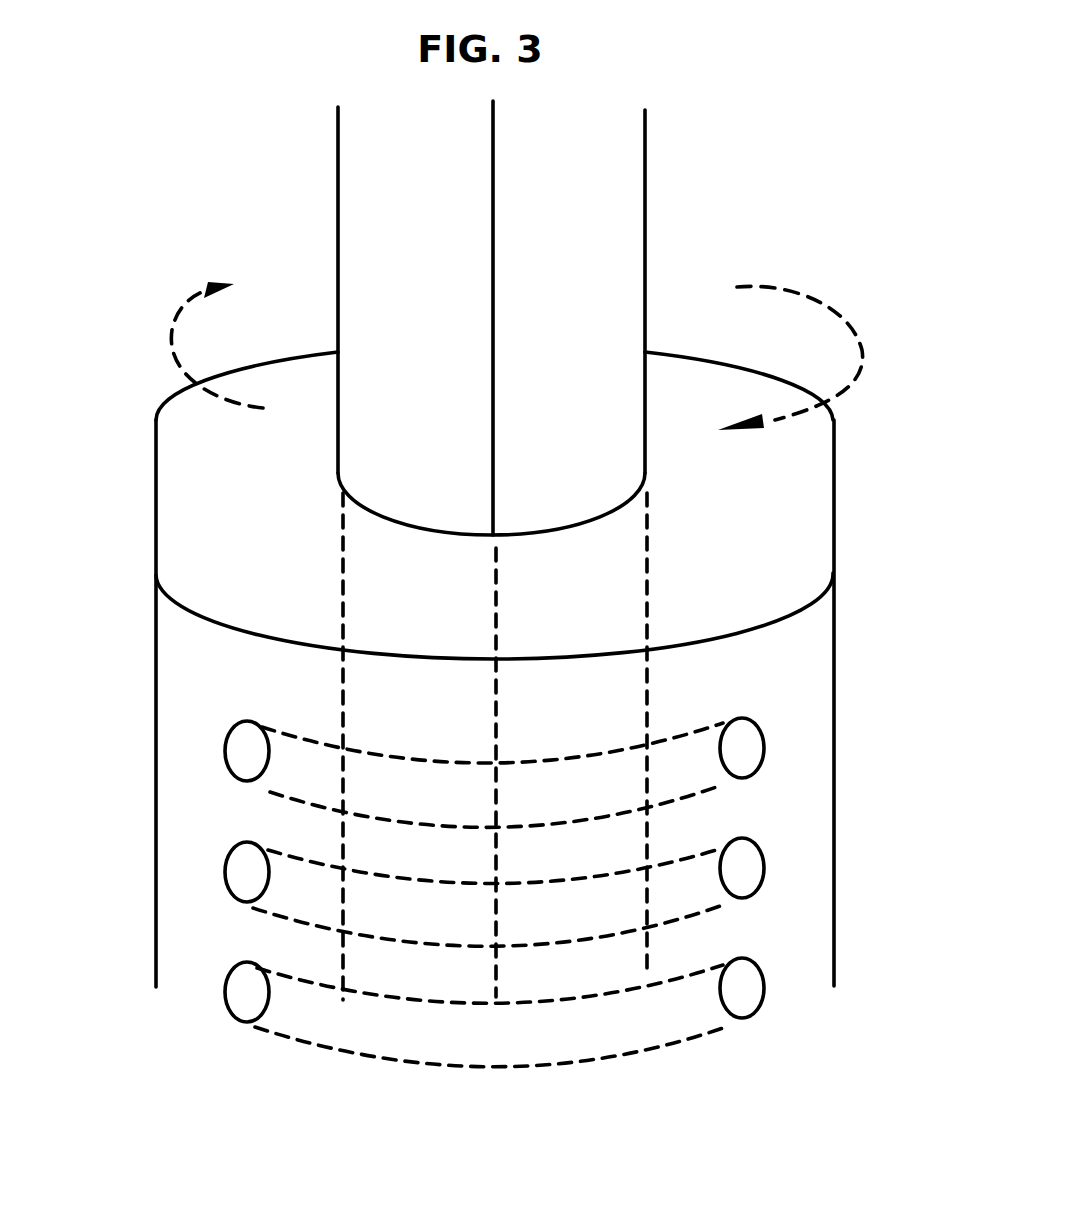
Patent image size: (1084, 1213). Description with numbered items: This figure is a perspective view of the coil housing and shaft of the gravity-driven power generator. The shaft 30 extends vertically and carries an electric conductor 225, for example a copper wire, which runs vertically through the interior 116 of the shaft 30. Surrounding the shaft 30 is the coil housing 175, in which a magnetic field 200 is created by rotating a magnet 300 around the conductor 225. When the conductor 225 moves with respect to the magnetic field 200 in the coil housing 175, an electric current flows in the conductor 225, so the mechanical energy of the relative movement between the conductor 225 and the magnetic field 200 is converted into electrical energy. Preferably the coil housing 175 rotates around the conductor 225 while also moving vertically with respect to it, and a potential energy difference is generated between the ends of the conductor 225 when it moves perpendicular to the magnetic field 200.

The interior of the shaft 116 is at (410, 217).
The shaft 30 is at (645, 217).
The electric conductor 225 is at (493, 343).
The coil housing 175 is at (834, 703).
The magnetic field 200 is at (297, 777).
The magnet 300 is at (231, 896).